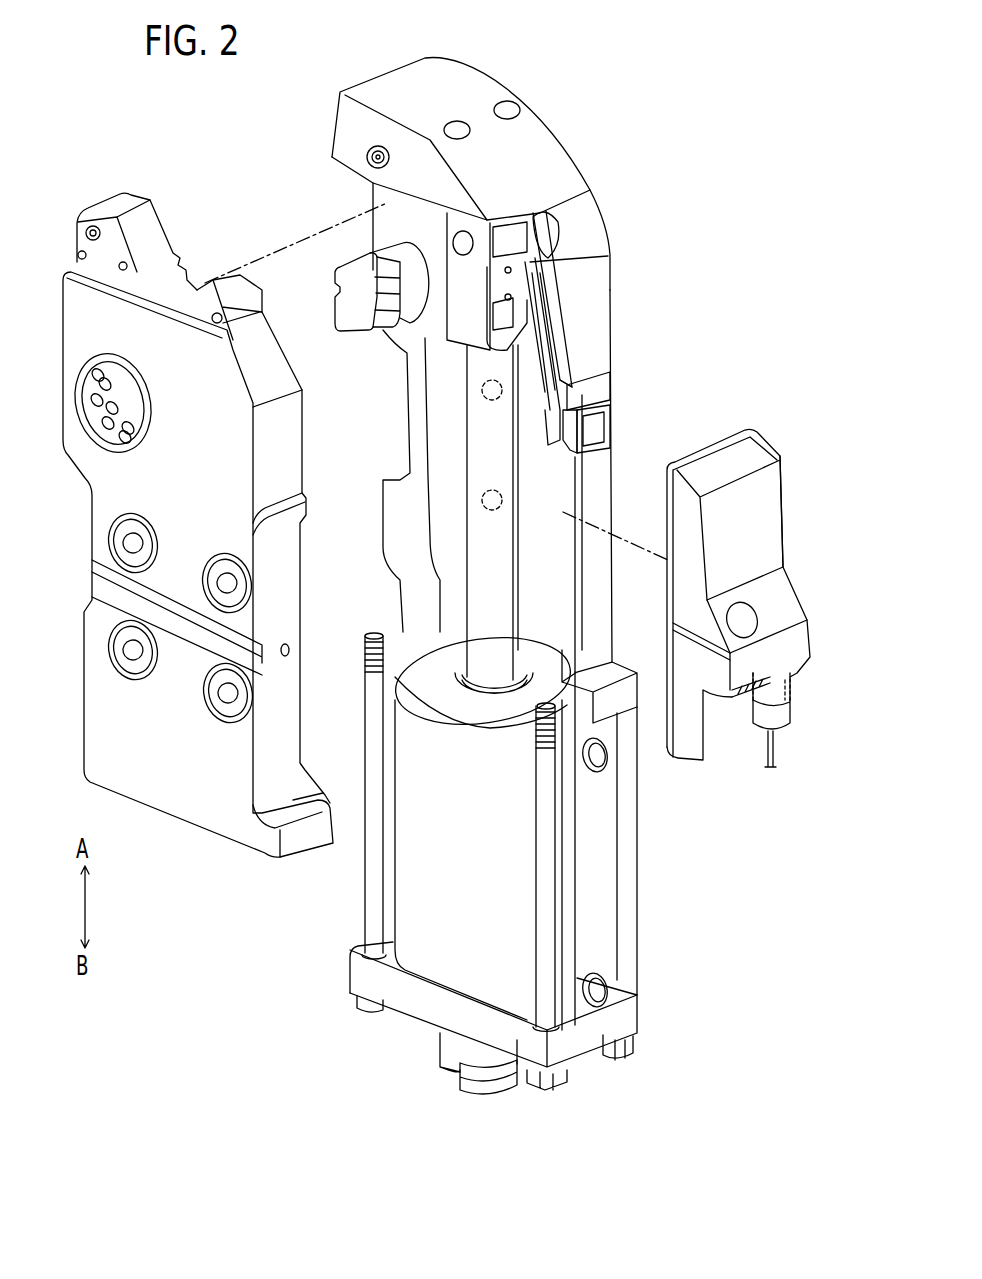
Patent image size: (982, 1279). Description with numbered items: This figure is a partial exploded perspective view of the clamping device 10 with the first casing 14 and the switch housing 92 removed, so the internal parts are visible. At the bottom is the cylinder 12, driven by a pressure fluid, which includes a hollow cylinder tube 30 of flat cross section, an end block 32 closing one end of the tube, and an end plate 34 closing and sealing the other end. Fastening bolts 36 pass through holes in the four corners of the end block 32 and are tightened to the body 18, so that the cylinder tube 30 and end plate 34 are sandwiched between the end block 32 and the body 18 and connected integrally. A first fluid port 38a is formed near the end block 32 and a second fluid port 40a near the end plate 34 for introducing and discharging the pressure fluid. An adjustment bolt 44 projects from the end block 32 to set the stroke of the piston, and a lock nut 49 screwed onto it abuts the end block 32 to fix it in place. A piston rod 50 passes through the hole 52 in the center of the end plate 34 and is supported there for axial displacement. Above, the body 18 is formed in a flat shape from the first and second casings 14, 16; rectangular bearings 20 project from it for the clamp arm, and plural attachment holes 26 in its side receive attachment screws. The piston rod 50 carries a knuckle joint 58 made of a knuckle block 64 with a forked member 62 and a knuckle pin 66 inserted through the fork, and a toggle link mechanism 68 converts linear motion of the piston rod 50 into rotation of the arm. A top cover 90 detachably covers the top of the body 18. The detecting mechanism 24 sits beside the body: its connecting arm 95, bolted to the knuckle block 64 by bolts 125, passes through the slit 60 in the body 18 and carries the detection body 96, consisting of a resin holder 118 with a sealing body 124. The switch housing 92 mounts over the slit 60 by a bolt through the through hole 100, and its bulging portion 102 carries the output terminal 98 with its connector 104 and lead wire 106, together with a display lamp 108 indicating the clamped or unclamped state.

The clamping device 10 is at (672, 136).
The cylinder 12 is at (628, 872).
The first casing 14 is at (157, 792).
The second casing 16 is at (602, 337).
The body 18 is at (627, 270).
The rectangular bearings 20 is at (333, 281).
The detecting mechanism 24 is at (773, 437).
The attachment holes 26 is at (131, 543).
The cylinder tube 30 is at (417, 893).
The end block 32 is at (410, 1010).
The end plate 34 is at (497, 707).
The fastening bolts 36 is at (357, 1000).
The first fluid port 38a is at (607, 980).
The second fluid port 40a is at (607, 753).
The adjustment bolt 44 is at (477, 1087).
The lock nut 49 is at (447, 1057).
The piston rod 50 is at (503, 537).
The hole 52 is at (483, 677).
The knuckle joint 58 is at (470, 357).
The slit 60 is at (575, 603).
The forked member 62 is at (567, 274).
The knuckle block 64 is at (448, 237).
The knuckle pin 66 is at (467, 238).
The toggle link mechanism 68 is at (555, 325).
The top cover 90 is at (480, 84).
The switch housing 92 is at (777, 520).
The connecting arm 95 is at (543, 363).
The detection body 96 is at (610, 406).
The output terminal 98 is at (780, 690).
The through hole 100 is at (746, 612).
The bulging portion 102 is at (790, 600).
The connector 104 is at (793, 712).
The lead wire 106 is at (763, 757).
The display lamp 108 is at (740, 703).
The holder 118 is at (570, 447).
The sealing body 124 is at (603, 437).
The bolts 125 is at (507, 272).